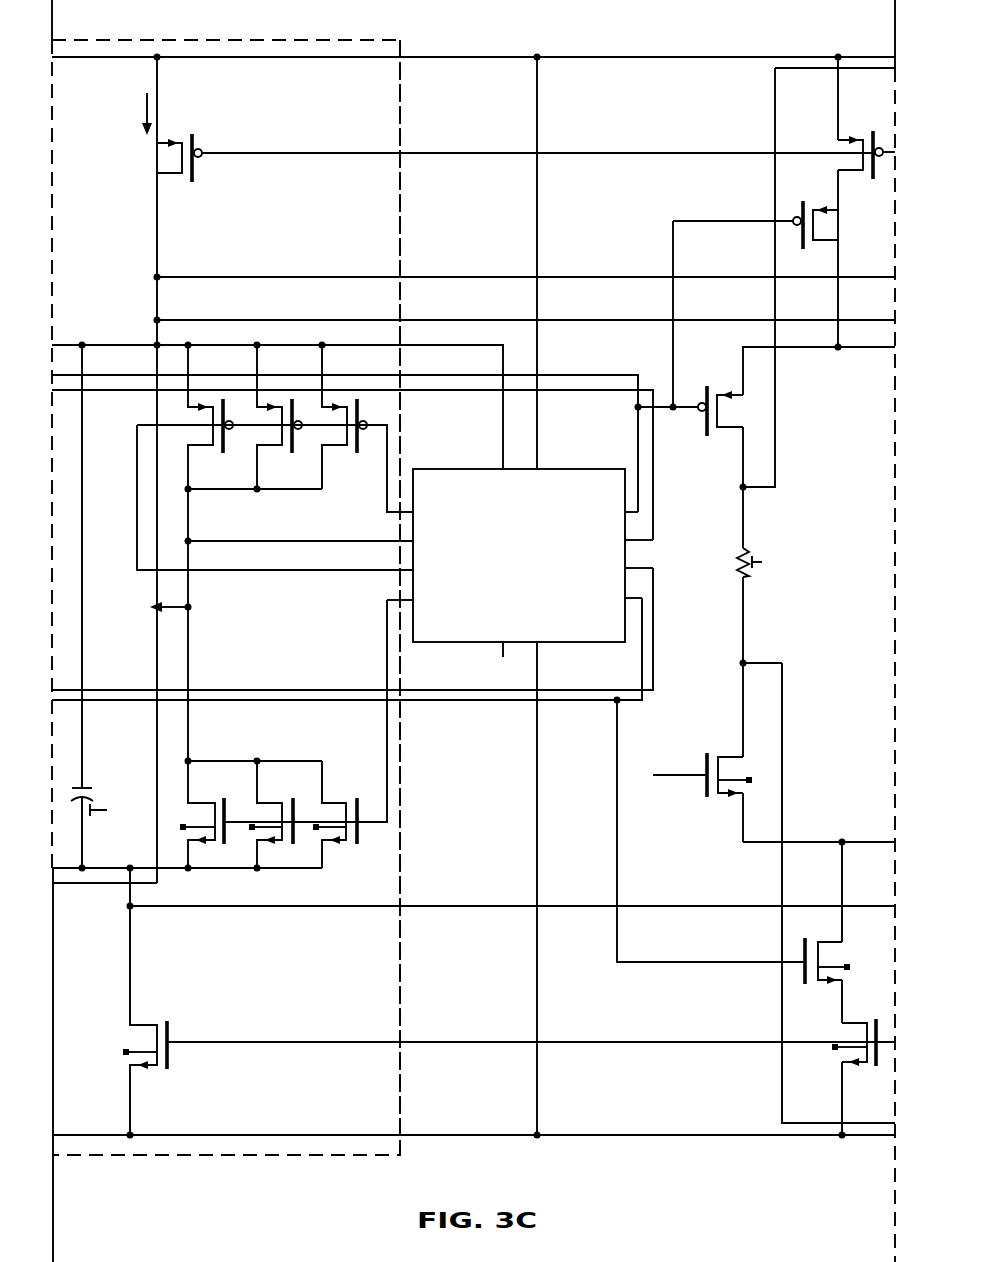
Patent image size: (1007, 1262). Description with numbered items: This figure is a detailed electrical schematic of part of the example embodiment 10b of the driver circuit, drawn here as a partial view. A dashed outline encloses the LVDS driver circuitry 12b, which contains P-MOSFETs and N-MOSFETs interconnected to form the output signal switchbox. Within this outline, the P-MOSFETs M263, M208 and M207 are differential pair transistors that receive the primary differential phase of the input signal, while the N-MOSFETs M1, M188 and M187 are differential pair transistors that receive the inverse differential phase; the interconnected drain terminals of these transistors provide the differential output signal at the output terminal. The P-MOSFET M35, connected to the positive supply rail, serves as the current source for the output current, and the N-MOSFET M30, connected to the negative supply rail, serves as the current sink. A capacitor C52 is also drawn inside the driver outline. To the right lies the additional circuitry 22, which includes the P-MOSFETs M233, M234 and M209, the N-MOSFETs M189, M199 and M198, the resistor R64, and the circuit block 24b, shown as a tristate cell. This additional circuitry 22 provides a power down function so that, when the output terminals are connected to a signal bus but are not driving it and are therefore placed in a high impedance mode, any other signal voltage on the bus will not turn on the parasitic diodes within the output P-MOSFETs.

The additional circuitry 22 is at (597, 47).
The LVDS driver circuitry 12b is at (400, 43).
The circuit block 24b is at (442, 468).
The detailed example embodiment 10b is at (801, 1159).
The P-MOSFET M35 is at (157, 470).
The P-MOSFET M263 is at (216, 553).
The P-MOSFET M208 is at (284, 417).
The P-MOSFET M207 is at (349, 417).
The N-MOSFET M1 is at (202, 814).
The N-MOSFET M188 is at (280, 814).
The N-MOSFET M187 is at (345, 814).
The N-MOSFET M30 is at (132, 1001).
The capacitor C52 is at (104, 606).
The P-MOSFET M233 is at (837, 151).
The P-MOSFET M234 is at (755, 235).
The P-MOSFET M209 is at (714, 420).
The resistor R64 is at (750, 562).
The N-MOSFET M189 is at (702, 791).
The N-MOSFET M199 is at (818, 950).
The N-MOSFET M198 is at (836, 1055).